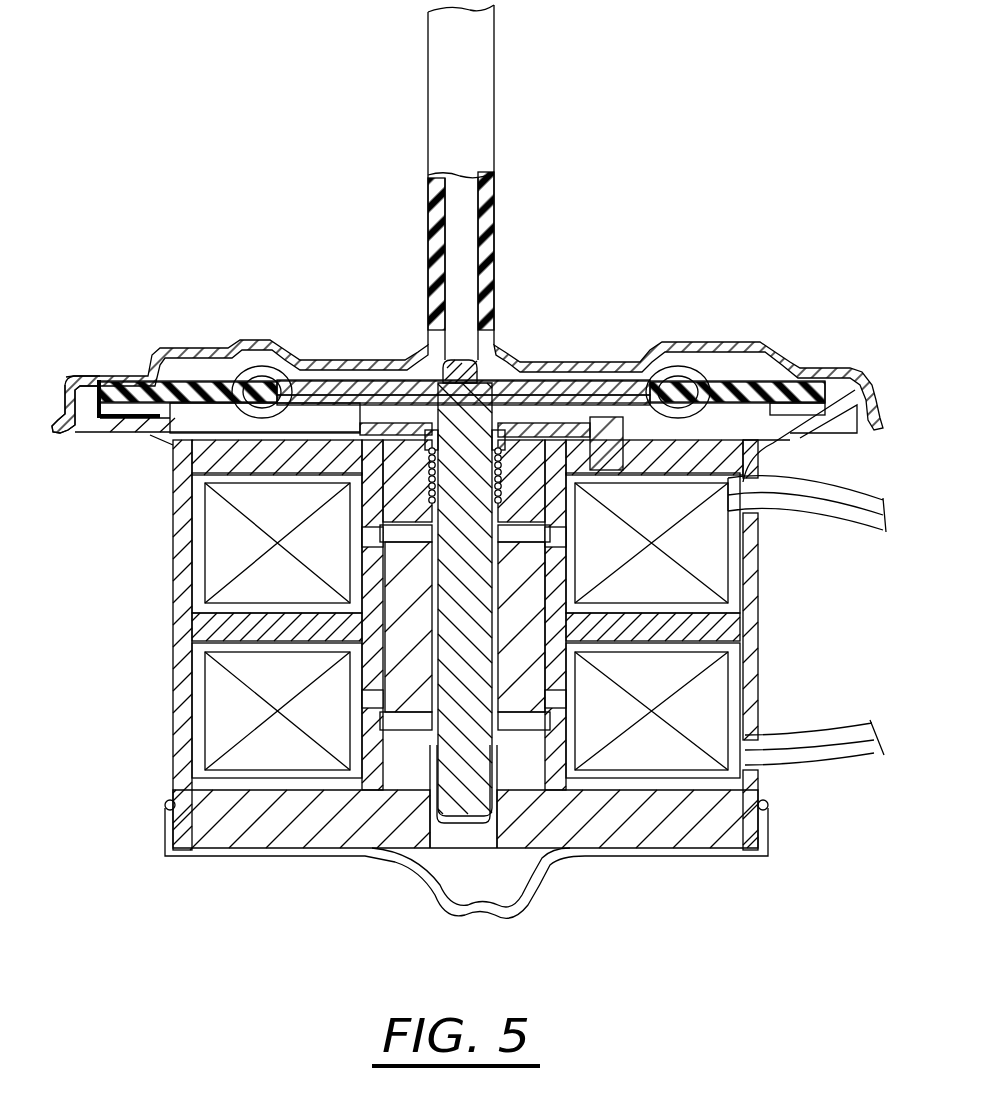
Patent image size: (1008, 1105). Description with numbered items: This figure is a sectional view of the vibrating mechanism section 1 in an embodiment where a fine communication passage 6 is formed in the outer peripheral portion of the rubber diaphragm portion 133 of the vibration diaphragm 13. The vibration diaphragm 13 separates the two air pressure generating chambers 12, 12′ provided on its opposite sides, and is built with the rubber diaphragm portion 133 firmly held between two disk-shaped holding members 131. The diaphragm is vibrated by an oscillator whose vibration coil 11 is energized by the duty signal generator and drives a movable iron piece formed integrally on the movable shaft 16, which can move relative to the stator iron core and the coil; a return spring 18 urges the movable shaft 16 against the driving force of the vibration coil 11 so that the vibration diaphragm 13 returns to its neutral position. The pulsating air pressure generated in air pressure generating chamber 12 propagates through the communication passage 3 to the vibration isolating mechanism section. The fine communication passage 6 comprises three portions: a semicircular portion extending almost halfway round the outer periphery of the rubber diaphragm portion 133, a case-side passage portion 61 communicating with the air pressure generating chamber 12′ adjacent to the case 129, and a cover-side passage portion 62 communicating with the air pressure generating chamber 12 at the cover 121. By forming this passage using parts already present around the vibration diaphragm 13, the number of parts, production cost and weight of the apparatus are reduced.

The vibrating mechanism section 1 is at (889, 341).
The communication passage 3 is at (453, 246).
The fine communication passage 6 is at (97, 379).
The vibration coil 11 is at (707, 563).
The air pressure generating chamber 12 is at (712, 353).
The air pressure generating chamber 12′ is at (213, 424).
The vibration diaphragm 13 is at (347, 300).
The movable shaft 16 is at (457, 382).
The return spring 18 is at (540, 433).
The case-side passage portion 61 is at (137, 422).
The cover-side passage portion 62 is at (753, 375).
The cover 121 is at (807, 372).
The case 129 is at (100, 434).
The disk-shaped holding member 131 is at (317, 379).
The rubber diaphragm portion 133 is at (133, 380).